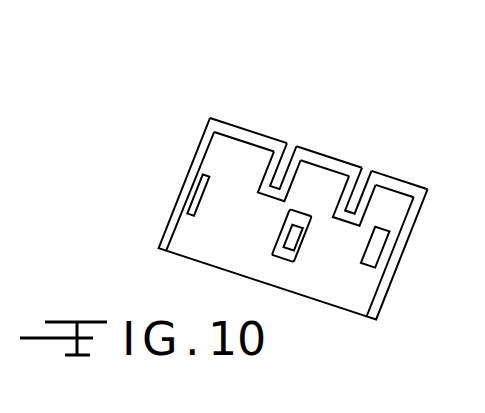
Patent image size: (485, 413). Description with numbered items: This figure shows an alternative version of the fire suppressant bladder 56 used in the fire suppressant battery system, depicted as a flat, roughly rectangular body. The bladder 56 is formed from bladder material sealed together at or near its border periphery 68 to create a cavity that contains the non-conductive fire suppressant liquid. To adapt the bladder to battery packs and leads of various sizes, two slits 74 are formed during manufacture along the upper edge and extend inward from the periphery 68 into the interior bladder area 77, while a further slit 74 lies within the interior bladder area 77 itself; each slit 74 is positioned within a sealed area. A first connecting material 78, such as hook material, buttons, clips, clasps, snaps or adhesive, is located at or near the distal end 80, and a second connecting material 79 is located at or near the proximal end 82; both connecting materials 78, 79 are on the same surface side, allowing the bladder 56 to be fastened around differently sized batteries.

The fire suppressant bladder 56 is at (243, 95).
The border periphery 68 is at (399, 178).
The slits 74 is at (283, 158).
The interior bladder area 77 is at (239, 234).
The first connecting material 78 is at (195, 184).
The second connecting material 79 is at (382, 250).
The distal end 80 is at (168, 220).
The proximal end 82 is at (390, 287).